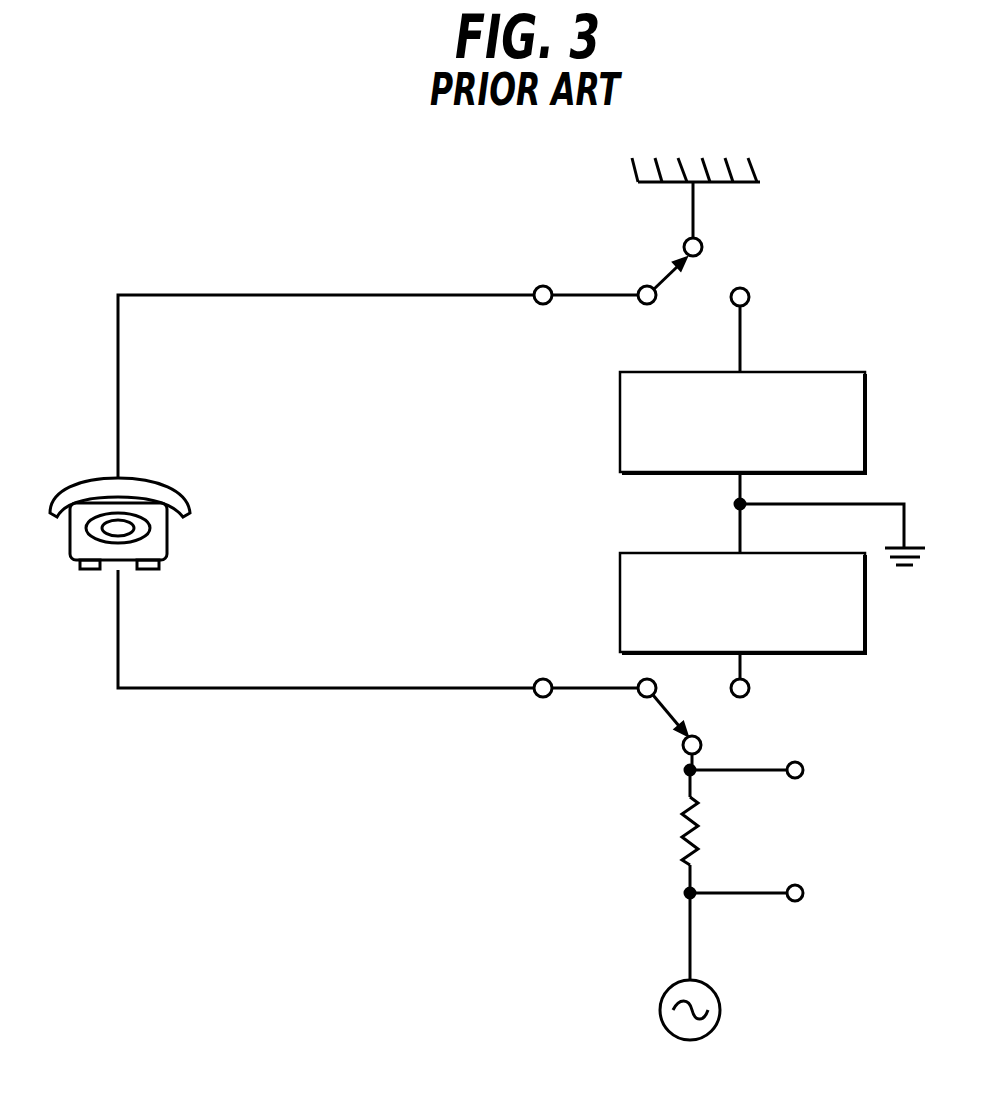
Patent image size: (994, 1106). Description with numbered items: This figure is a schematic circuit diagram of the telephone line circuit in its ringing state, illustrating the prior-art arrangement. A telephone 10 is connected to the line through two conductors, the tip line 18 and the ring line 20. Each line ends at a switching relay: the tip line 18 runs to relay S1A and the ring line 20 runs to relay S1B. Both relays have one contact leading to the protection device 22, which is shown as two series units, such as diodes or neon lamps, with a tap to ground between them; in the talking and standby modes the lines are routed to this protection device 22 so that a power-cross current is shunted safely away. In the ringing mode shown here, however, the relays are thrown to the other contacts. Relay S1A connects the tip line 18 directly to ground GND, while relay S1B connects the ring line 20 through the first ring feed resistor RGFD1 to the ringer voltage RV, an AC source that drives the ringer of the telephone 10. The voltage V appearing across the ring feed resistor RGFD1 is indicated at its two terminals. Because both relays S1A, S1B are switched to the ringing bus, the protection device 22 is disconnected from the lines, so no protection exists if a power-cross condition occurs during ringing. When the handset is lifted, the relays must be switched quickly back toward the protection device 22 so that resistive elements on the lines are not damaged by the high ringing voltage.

The telephone 10 is at (110, 573).
The tip line 18 is at (507, 292).
The ring line 20 is at (505, 683).
The protection device 22 is at (623, 512).
The ground GND is at (733, 186).
The relay S1A is at (702, 287).
The relay S1B is at (690, 703).
The first ring feed resistor RGFD1 is at (683, 845).
The voltage V is at (740, 845).
The ringer voltage RV is at (720, 1017).